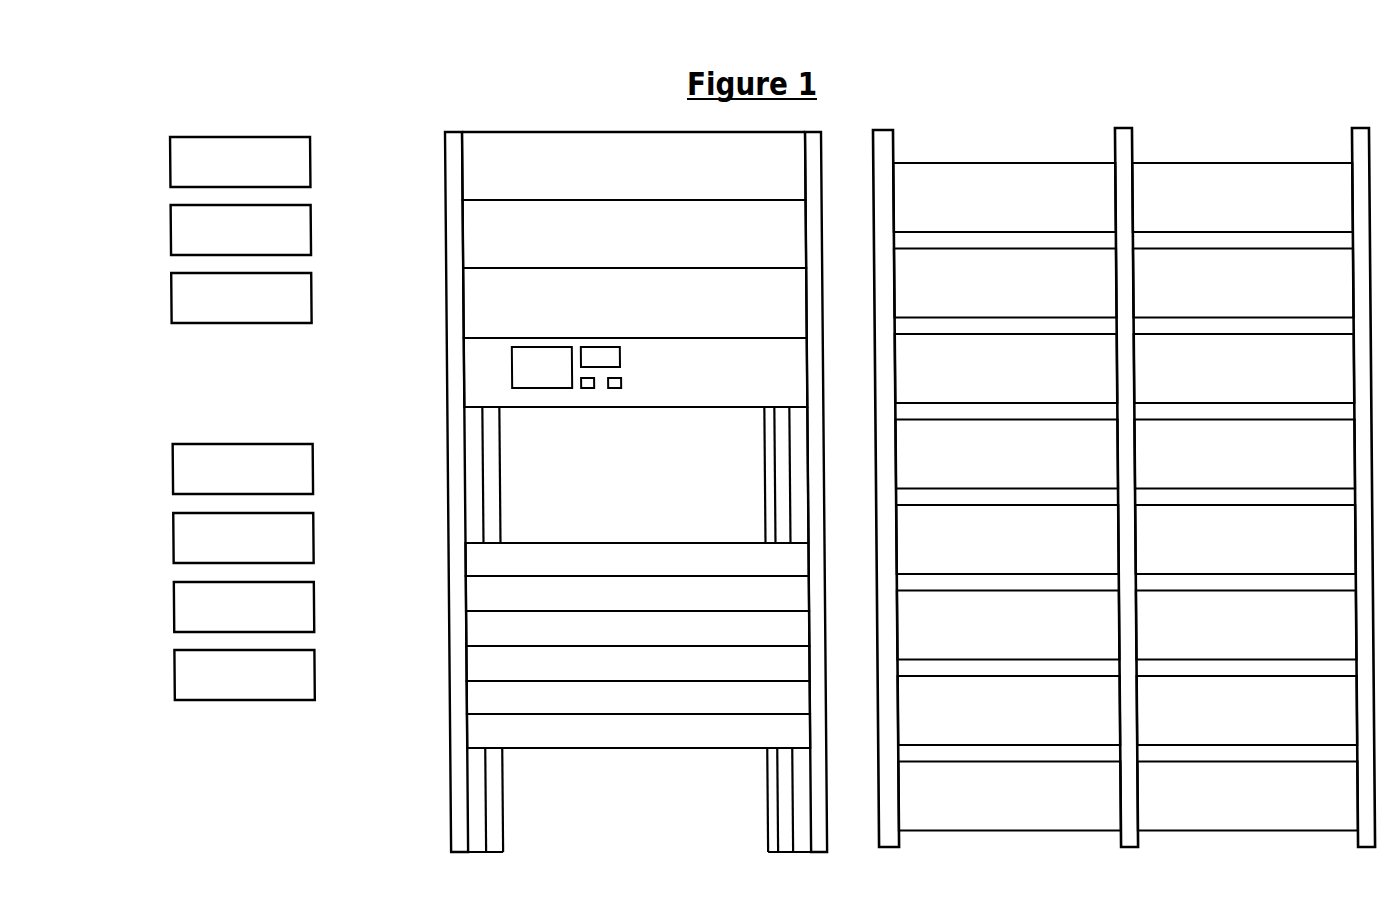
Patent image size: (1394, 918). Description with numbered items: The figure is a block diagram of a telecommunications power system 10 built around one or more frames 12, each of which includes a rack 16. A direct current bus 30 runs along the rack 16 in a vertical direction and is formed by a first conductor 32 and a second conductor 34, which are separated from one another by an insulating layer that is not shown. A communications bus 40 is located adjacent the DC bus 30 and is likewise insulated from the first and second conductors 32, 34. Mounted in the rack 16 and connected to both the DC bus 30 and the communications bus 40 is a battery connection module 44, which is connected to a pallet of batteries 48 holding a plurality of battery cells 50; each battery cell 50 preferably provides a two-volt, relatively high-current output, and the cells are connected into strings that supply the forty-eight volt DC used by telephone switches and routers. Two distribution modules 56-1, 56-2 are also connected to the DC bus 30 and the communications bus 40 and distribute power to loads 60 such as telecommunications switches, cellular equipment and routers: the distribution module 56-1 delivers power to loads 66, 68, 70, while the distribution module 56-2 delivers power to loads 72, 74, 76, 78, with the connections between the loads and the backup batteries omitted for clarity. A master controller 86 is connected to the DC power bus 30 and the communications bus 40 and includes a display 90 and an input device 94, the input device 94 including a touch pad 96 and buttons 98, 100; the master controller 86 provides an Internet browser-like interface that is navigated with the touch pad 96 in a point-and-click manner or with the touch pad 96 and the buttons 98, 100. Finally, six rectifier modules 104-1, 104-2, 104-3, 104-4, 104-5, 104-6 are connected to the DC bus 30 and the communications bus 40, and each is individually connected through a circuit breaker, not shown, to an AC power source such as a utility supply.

The telecommunications power system 10 is at (1065, 93).
The frame 12 is at (548, 115).
The rack 16 is at (455, 168).
The direct current (DC) bus 30 is at (772, 457).
The first conductor 32 is at (787, 489).
The second conductor 34 is at (805, 515).
The communications bus 40 is at (762, 430).
The battery connection module 44 is at (501, 301).
The pallet of batteries 48 is at (995, 110).
The battery cell 50 is at (1125, 497).
The distribution module 56-1 is at (528, 177).
The distribution module 56-2 is at (536, 247).
The loads 60 is at (293, 98).
The load 66 is at (310, 160).
The load 68 is at (310, 228).
The load 70 is at (310, 307).
The load 72 is at (310, 468).
The load 74 is at (310, 538).
The load 76 is at (310, 606).
The load 78 is at (310, 675).
The master controller 86 is at (793, 374).
The display 90 is at (551, 379).
The input device 94 is at (630, 357).
The touch pad 96 is at (598, 347).
The button 98 is at (585, 390).
The button 100 is at (615, 390).
The rectifier module 104-1 is at (540, 571).
The rectifier module 104-2 is at (540, 605).
The rectifier module 104-3 is at (540, 640).
The rectifier module 104-4 is at (540, 674).
The rectifier module 104-5 is at (540, 708).
The rectifier module 104-6 is at (540, 743).